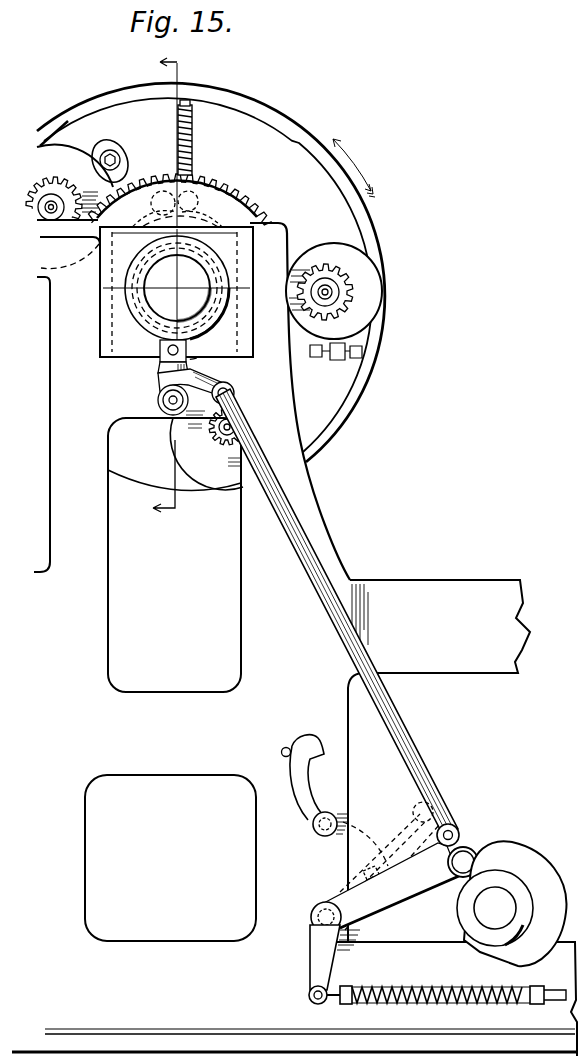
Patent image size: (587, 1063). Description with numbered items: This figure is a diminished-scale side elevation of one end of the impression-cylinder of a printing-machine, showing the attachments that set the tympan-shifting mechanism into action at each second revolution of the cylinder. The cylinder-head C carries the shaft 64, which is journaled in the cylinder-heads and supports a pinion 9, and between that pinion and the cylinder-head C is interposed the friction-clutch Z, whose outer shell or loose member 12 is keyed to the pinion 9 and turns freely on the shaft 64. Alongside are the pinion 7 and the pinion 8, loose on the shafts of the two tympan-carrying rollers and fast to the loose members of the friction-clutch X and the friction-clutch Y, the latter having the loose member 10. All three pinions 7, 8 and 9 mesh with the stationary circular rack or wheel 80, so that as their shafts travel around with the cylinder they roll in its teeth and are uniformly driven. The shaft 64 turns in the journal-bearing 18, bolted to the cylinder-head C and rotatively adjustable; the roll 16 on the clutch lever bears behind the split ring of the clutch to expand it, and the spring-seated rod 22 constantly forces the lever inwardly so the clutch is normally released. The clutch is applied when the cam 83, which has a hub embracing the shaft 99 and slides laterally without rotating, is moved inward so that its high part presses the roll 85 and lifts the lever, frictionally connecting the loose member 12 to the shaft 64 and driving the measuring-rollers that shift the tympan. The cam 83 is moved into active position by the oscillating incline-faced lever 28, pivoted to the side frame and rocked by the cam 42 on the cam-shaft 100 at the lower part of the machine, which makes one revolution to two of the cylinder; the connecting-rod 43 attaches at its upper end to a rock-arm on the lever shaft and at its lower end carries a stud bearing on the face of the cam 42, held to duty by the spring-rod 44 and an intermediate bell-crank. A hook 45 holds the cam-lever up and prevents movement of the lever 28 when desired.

The cylinder-head C is at (211, 272).
The friction-clutch Z is at (62, 134).
The pinion 9 is at (75, 207).
The journal-bearing 18 is at (114, 152).
The outer shell or loose member 12 is at (65, 196).
The shaft 64 is at (55, 214).
The stationary circular rack or wheel 80 is at (241, 200).
The roll 16 is at (186, 72).
The spring-seated rod 22 is at (169, 137).
The roll 85 is at (152, 208).
The cam 83 is at (192, 240).
The shaft 99 is at (176, 292).
The oscillating incline-faced lever 28 is at (202, 377).
The friction-clutch Y is at (343, 239).
The outer or loose member 10 is at (278, 359).
The pinion 8 is at (339, 295).
The friction-clutch X is at (172, 446).
The pinion 7 is at (205, 441).
The connecting-rod 43 is at (308, 588).
The hook 45 is at (304, 808).
The cam 42 is at (548, 897).
The cam-shaft 100 is at (495, 908).
The spring-rod 44 is at (446, 985).